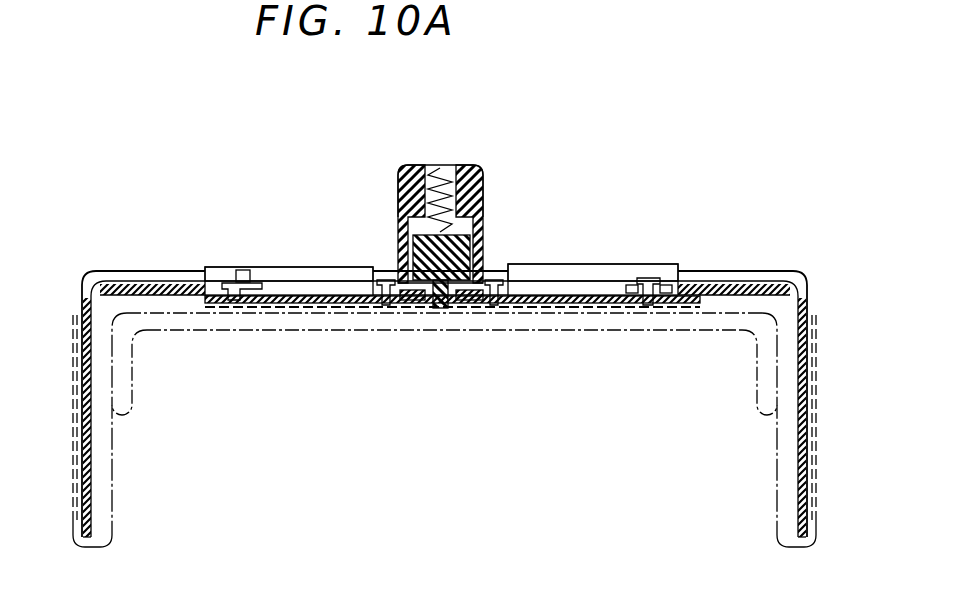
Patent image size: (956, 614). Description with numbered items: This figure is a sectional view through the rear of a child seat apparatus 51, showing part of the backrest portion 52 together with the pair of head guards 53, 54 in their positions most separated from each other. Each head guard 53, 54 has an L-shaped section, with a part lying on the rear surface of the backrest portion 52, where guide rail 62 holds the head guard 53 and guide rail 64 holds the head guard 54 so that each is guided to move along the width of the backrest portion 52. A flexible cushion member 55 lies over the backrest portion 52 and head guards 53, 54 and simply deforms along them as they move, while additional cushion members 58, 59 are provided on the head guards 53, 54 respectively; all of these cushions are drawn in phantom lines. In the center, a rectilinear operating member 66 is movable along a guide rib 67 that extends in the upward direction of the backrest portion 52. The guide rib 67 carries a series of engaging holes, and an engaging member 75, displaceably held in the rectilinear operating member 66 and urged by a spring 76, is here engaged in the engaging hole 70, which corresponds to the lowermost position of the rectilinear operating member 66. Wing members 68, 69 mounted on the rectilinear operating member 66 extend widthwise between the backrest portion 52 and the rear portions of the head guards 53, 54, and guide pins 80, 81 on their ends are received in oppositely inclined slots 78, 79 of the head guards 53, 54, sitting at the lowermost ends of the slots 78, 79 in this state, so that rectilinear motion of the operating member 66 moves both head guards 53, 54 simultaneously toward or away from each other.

The child seat apparatus 51 is at (362, 113).
The backrest portion 52 is at (587, 309).
The head guard 53 is at (797, 470).
The head guard 54 is at (93, 480).
The cushion member 55 is at (707, 330).
The cushion member 58 is at (780, 533).
The cushion member 59 is at (110, 538).
The guide rail 62 is at (570, 272).
The guide rail 64 is at (313, 267).
The rectilinear operating member 66 is at (400, 167).
The guide rib 67 is at (468, 243).
The wing member 68 is at (607, 272).
The wing member 69 is at (287, 267).
The engaging hole 70 is at (433, 307).
The engaging member 75 is at (422, 262).
The spring 76 is at (478, 170).
The slot 78 is at (652, 272).
The slot 79 is at (233, 267).
The guide pin 80 is at (642, 272).
The guide pin 81 is at (243, 267).